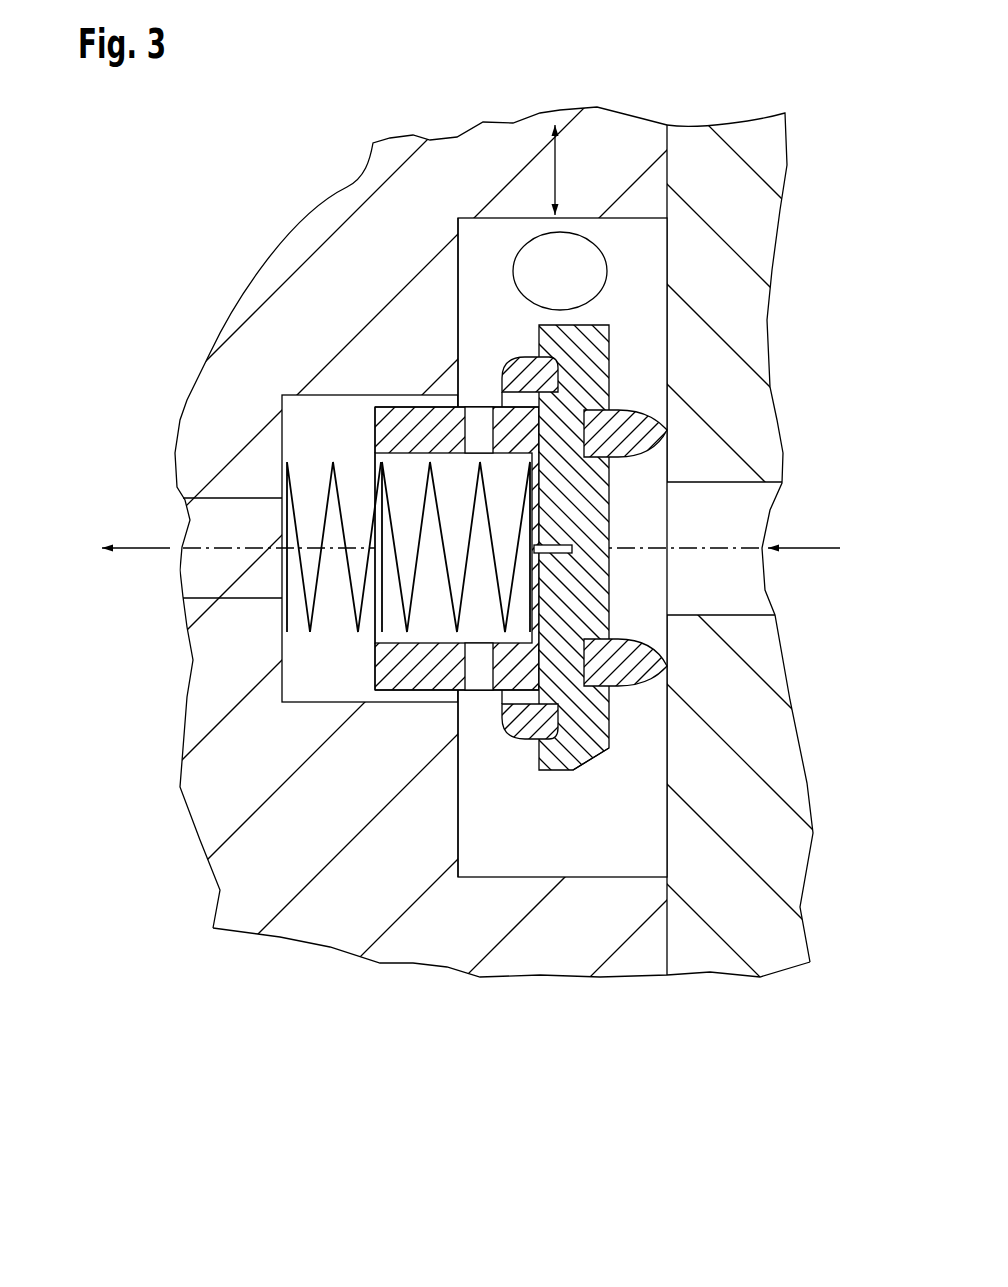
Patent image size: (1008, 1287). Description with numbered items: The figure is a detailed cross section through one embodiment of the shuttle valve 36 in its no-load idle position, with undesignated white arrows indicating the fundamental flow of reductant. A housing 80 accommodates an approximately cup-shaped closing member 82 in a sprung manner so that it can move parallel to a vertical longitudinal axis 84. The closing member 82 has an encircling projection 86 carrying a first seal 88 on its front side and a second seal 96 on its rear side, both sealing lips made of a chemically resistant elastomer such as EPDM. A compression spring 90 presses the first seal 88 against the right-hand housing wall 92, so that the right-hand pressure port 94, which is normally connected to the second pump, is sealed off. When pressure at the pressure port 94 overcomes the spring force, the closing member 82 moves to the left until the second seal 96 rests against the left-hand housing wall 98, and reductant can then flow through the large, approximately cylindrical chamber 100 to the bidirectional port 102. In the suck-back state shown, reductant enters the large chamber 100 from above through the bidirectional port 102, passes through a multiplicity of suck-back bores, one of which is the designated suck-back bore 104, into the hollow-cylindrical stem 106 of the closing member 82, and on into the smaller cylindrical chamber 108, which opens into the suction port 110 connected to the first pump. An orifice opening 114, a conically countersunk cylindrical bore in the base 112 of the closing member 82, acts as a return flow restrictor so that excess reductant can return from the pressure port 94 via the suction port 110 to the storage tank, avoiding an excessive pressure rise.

The shuttle valve 36 is at (705, 1120).
The housing 80 is at (335, 907).
The closing member 82 is at (427, 667).
The longitudinal axis 84 is at (712, 550).
The encircling projection 86 is at (603, 758).
The first seal 88 is at (663, 427).
The compression spring 90 is at (350, 580).
The right-hand housing wall 92 is at (667, 850).
The pressure port 94 is at (738, 512).
The second seal 96 is at (524, 363).
The left-hand housing wall 98 is at (460, 790).
The large chamber 100 is at (556, 836).
The bidirectional port 102 is at (590, 250).
The suck-back bore 104 is at (477, 428).
The hollow-cylindrical stem 106 is at (380, 415).
The small chamber 108 is at (303, 440).
The suction port 110 is at (183, 505).
The base 112 is at (590, 366).
The orifice opening 114 is at (573, 547).